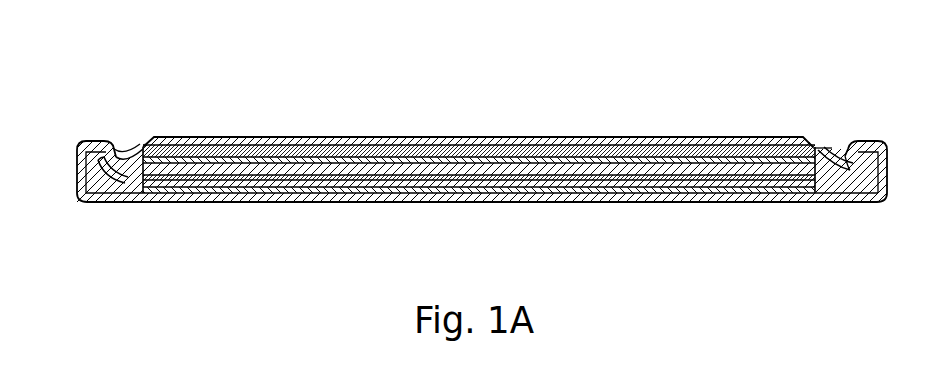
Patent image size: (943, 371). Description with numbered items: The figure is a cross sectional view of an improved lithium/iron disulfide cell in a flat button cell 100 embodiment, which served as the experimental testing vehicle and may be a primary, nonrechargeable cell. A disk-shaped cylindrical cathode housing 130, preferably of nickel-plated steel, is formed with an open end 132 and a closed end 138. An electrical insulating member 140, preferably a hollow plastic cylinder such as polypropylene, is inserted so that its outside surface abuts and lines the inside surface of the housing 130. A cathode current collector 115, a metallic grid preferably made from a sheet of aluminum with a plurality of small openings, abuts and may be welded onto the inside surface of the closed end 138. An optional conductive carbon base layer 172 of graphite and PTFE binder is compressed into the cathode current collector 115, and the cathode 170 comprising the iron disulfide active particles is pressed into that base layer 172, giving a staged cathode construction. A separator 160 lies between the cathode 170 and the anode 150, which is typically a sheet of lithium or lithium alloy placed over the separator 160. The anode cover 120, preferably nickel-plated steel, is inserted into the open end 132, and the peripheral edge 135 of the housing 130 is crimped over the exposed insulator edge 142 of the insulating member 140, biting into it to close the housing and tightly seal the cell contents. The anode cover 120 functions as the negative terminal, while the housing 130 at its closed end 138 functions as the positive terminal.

The button cell 100 is at (625, 86).
The cathode current collector 115 is at (665, 190).
The anode cover 120 is at (245, 137).
The cathode housing 130 is at (891, 173).
The open end 132 is at (835, 147).
The peripheral edge 135 is at (85, 142).
The closed end 138 is at (455, 203).
The electrical insulating member 140 is at (107, 190).
The insulator edge 142 is at (122, 148).
The anode 150 is at (478, 145).
The separator 160 is at (372, 147).
The cathode 170 is at (575, 178).
The conductive carbon base layer 172 is at (300, 183).